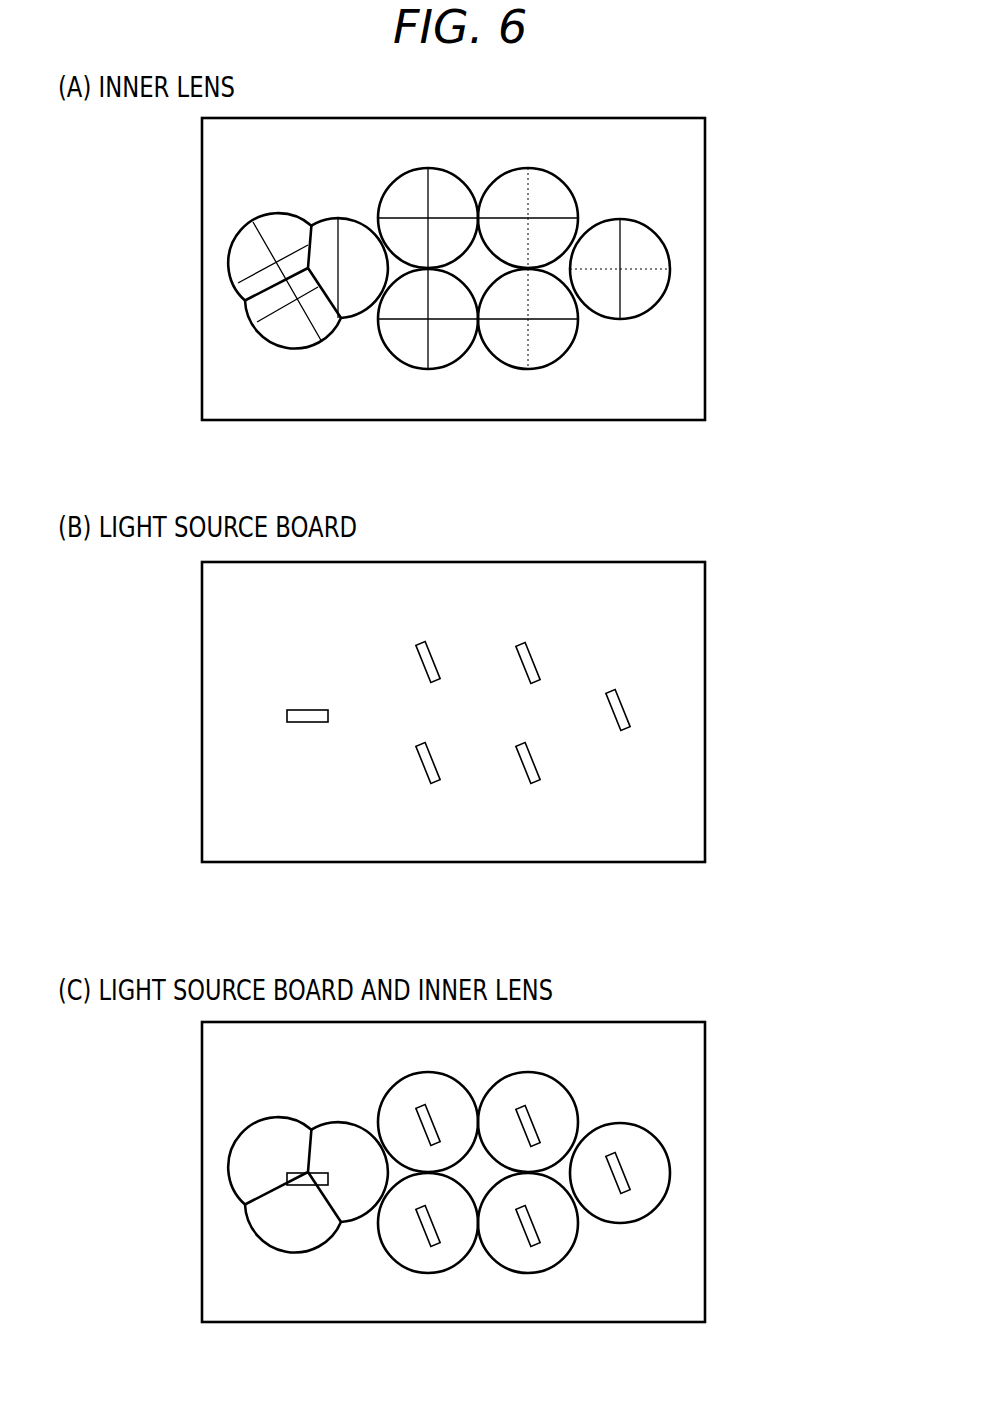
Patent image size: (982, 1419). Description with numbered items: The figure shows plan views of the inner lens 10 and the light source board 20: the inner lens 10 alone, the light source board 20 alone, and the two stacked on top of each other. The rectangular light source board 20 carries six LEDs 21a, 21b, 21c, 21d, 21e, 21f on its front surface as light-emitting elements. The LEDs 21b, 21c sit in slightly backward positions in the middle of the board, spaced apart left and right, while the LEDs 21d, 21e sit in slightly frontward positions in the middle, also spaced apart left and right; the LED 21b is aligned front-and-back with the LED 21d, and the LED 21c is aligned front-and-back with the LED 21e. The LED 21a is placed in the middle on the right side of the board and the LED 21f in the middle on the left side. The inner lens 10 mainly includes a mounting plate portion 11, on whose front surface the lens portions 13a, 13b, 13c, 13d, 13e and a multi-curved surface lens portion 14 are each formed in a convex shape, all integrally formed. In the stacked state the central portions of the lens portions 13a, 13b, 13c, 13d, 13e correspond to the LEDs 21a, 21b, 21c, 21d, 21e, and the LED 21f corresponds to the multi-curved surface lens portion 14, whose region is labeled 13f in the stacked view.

The inner lens 10 is at (642, 111).
The mounting plate portion 11 is at (677, 225).
The lens portion 13a is at (665, 295).
The lens portion 13b is at (577, 194).
The lens portion 13c is at (378, 203).
The lens portion 13d is at (575, 353).
The lens portion 13e is at (390, 355).
The lens portion 13f is at (287, 1179).
The multi-curved surface lens portion 14 is at (248, 332).
The light source board 20 is at (664, 549).
The LED 21a is at (632, 710).
The LED 21b is at (538, 663).
The LED 21c is at (422, 668).
The LED 21d is at (538, 762).
The LED 21e is at (422, 767).
The LED 21f is at (287, 719).